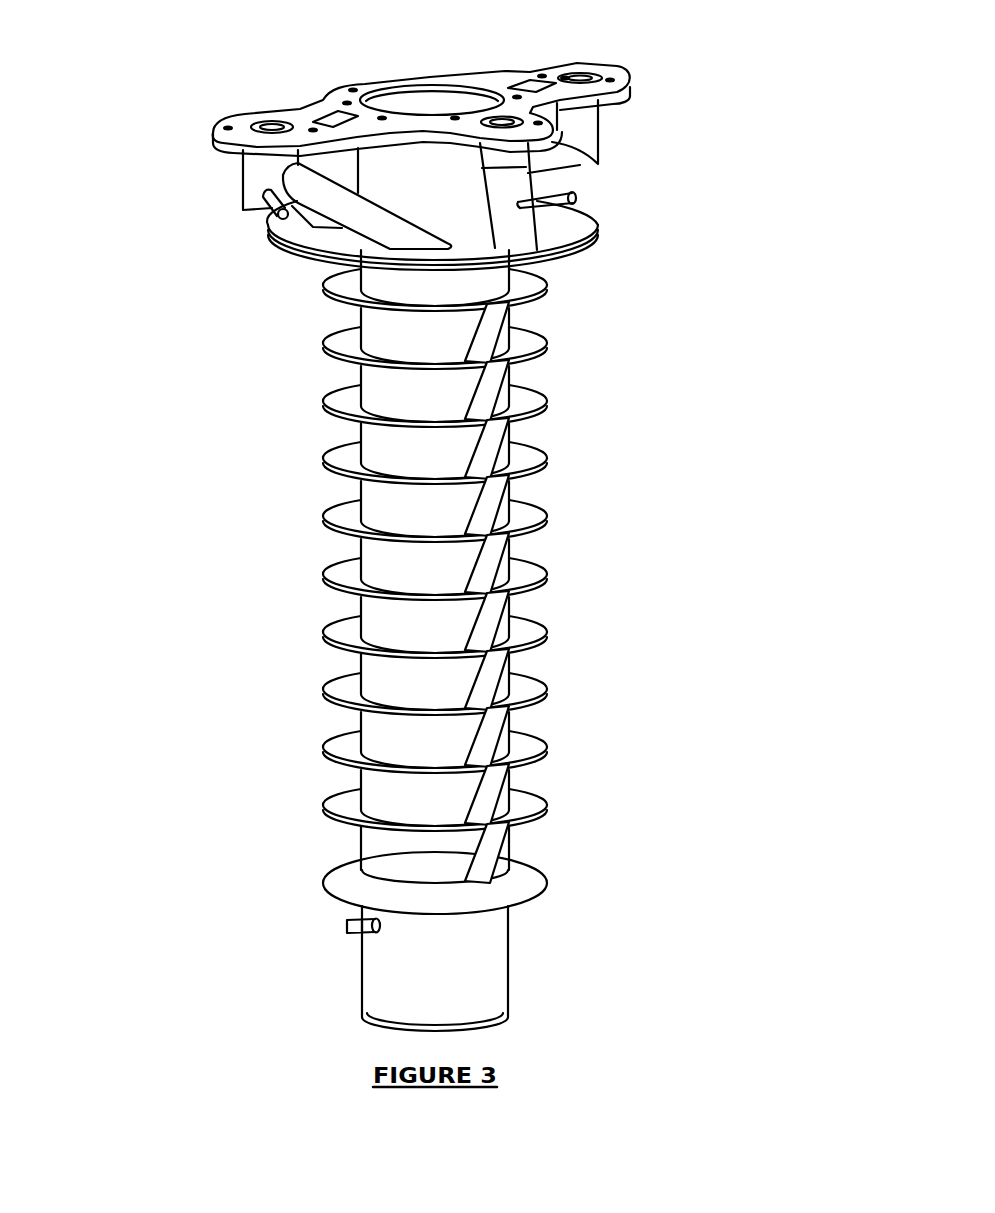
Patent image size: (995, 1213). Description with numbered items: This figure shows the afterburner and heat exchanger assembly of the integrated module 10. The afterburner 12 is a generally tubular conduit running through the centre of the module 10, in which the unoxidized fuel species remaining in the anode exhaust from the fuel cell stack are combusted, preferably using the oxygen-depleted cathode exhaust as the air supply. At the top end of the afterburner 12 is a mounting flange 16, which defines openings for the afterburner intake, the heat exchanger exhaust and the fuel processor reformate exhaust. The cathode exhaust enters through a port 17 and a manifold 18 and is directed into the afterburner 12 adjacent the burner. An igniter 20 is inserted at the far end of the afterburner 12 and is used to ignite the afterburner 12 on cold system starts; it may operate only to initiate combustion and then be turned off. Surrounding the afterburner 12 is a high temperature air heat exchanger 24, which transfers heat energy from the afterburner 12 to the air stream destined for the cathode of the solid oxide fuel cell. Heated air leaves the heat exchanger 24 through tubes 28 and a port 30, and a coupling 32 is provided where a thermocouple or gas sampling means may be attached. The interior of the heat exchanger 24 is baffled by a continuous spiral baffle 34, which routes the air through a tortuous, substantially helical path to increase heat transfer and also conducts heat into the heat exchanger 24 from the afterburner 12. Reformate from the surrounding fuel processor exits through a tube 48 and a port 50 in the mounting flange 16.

The module 10 is at (138, 517).
The afterburner 12 is at (446, 619).
The mounting flange 16 is at (377, 80).
The port 17 is at (584, 70).
The manifold 18 is at (579, 160).
The igniter 20 is at (352, 940).
The high temperature air heat exchanger 24 is at (545, 548).
The tubes 28 is at (347, 213).
The port 30 is at (275, 120).
The coupling 32 is at (270, 213).
The baffle 34 is at (543, 343).
The tube 48 is at (527, 233).
The port 50 is at (504, 117).